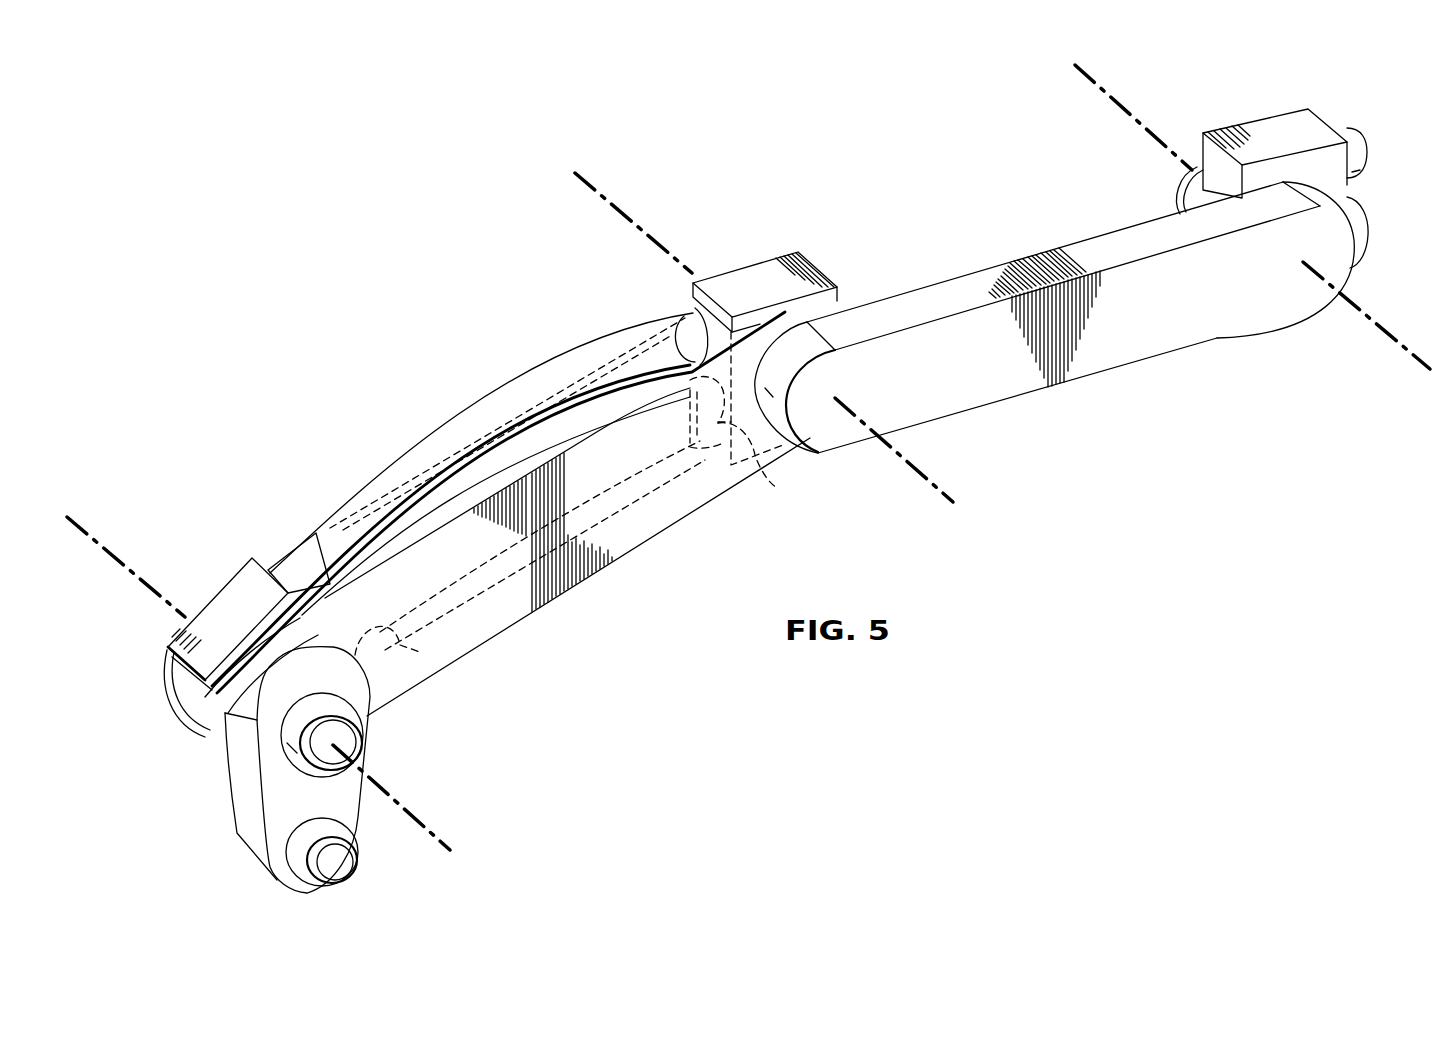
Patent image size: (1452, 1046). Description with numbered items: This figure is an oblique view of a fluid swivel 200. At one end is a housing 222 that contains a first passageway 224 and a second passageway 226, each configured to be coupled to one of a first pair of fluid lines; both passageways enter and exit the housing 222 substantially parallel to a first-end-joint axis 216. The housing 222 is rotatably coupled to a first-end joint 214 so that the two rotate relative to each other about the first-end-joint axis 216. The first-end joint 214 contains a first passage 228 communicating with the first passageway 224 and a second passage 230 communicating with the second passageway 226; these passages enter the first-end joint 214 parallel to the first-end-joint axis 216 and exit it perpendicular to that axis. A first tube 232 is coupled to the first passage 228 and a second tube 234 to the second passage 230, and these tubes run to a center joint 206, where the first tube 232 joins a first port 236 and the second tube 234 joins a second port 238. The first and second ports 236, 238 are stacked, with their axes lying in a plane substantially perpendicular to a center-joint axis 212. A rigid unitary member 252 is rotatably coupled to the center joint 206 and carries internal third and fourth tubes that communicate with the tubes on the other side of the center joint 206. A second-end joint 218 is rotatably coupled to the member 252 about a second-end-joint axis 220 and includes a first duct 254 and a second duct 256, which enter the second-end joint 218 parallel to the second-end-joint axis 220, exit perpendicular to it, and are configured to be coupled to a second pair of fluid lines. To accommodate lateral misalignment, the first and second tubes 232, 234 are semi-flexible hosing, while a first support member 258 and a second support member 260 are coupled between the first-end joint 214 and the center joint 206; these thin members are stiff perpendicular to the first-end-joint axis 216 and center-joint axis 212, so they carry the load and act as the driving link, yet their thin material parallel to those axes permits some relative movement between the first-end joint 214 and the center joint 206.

The fluid swivel 200 is at (390, 145).
The center joint 206 is at (762, 270).
The center-joint axis 212 is at (582, 178).
The first-end joint 214 is at (228, 593).
The first-end-joint axis 216 is at (80, 529).
The second-end joint 218 is at (1270, 122).
The second-end-joint axis 220 is at (1083, 75).
The housing 222 is at (240, 806).
The first passageway 224 is at (352, 748).
The second passageway 226 is at (337, 866).
The first passage 228 is at (318, 572).
The second passage 230 is at (403, 638).
The first tube 232 is at (425, 440).
The second tube 234 is at (505, 430).
The first port 236 is at (688, 305).
The second port 238 is at (760, 476).
The rigid unitary member 252 is at (1143, 348).
The first duct 254 is at (1367, 152).
The second duct 256 is at (1366, 224).
The first support member 258 is at (646, 535).
The second support member 260 is at (278, 562).